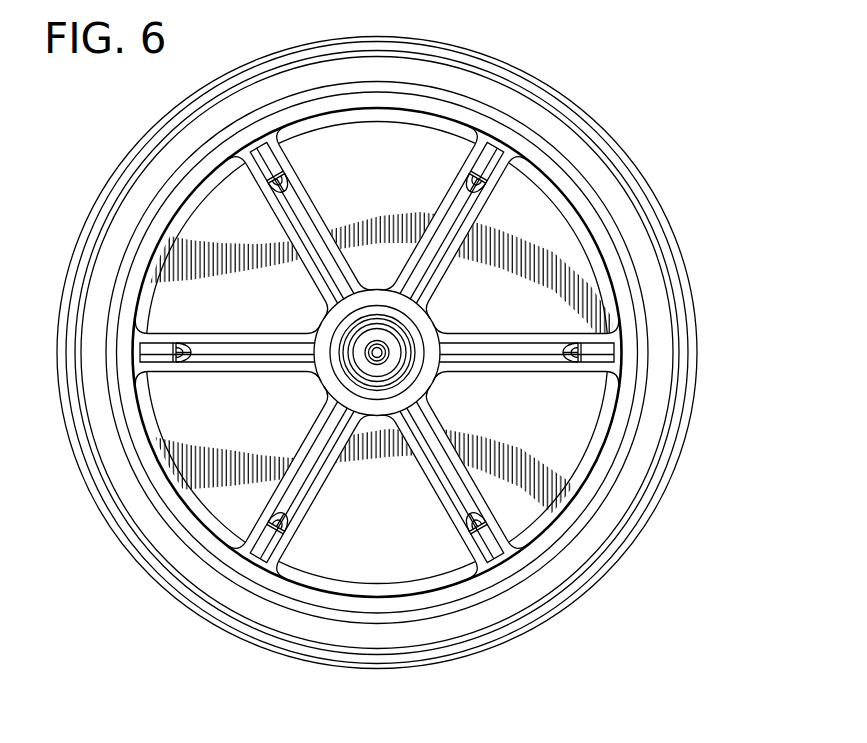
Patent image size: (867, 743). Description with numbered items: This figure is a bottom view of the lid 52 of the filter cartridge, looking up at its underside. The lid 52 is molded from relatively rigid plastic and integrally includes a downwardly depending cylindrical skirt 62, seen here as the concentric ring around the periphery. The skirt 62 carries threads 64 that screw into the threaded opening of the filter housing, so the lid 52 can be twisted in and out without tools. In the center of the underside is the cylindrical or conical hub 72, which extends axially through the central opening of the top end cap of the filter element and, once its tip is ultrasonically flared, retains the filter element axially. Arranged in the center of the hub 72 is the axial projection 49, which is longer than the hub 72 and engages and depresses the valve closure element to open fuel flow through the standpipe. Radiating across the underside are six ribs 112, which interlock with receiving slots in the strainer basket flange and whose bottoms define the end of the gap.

The lid 52 is at (633, 158).
The cylindrical skirt 62 is at (657, 335).
The threads 64 is at (680, 368).
The ribs 112 is at (583, 352).
The axial projection 49 is at (377, 353).
The hub 72 is at (403, 370).